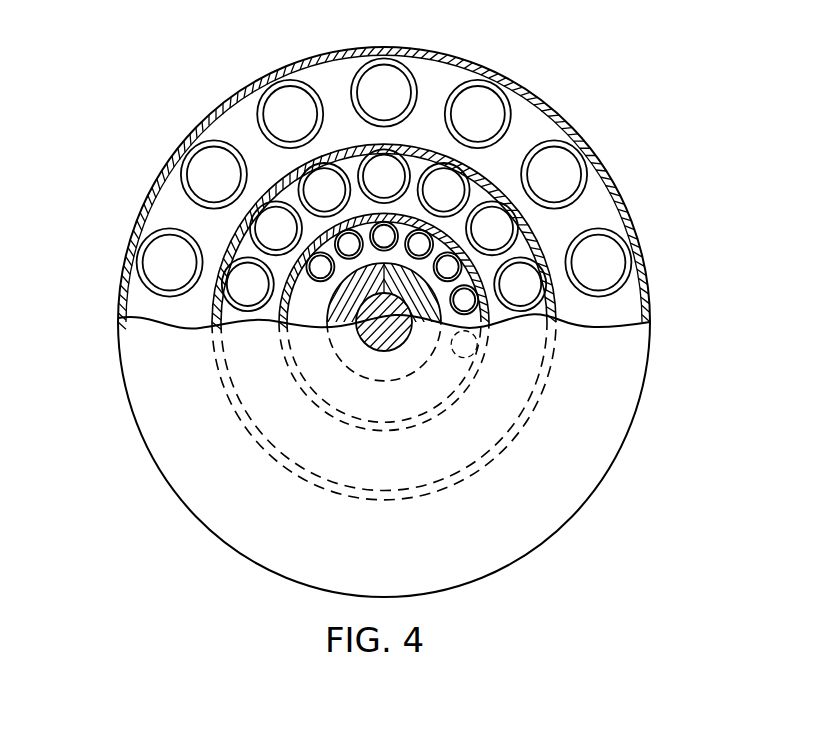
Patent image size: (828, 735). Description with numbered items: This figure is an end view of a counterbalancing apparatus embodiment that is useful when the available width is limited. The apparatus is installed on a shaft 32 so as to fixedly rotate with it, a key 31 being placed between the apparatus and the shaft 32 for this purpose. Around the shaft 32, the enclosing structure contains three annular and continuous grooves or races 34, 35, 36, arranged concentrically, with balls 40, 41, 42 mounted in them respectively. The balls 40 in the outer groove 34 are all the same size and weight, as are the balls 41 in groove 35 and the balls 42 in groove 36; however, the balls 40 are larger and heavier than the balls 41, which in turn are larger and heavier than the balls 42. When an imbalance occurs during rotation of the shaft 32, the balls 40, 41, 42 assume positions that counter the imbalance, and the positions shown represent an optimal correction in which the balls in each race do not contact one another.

The key 31 is at (338, 343).
The shaft 32 is at (395, 350).
The groove or race 34 is at (540, 240).
The groove or race 35 is at (285, 272).
The groove or race 36 is at (382, 294).
The balls 40 is at (273, 112).
The balls 41 is at (455, 190).
The balls 42 is at (316, 284).